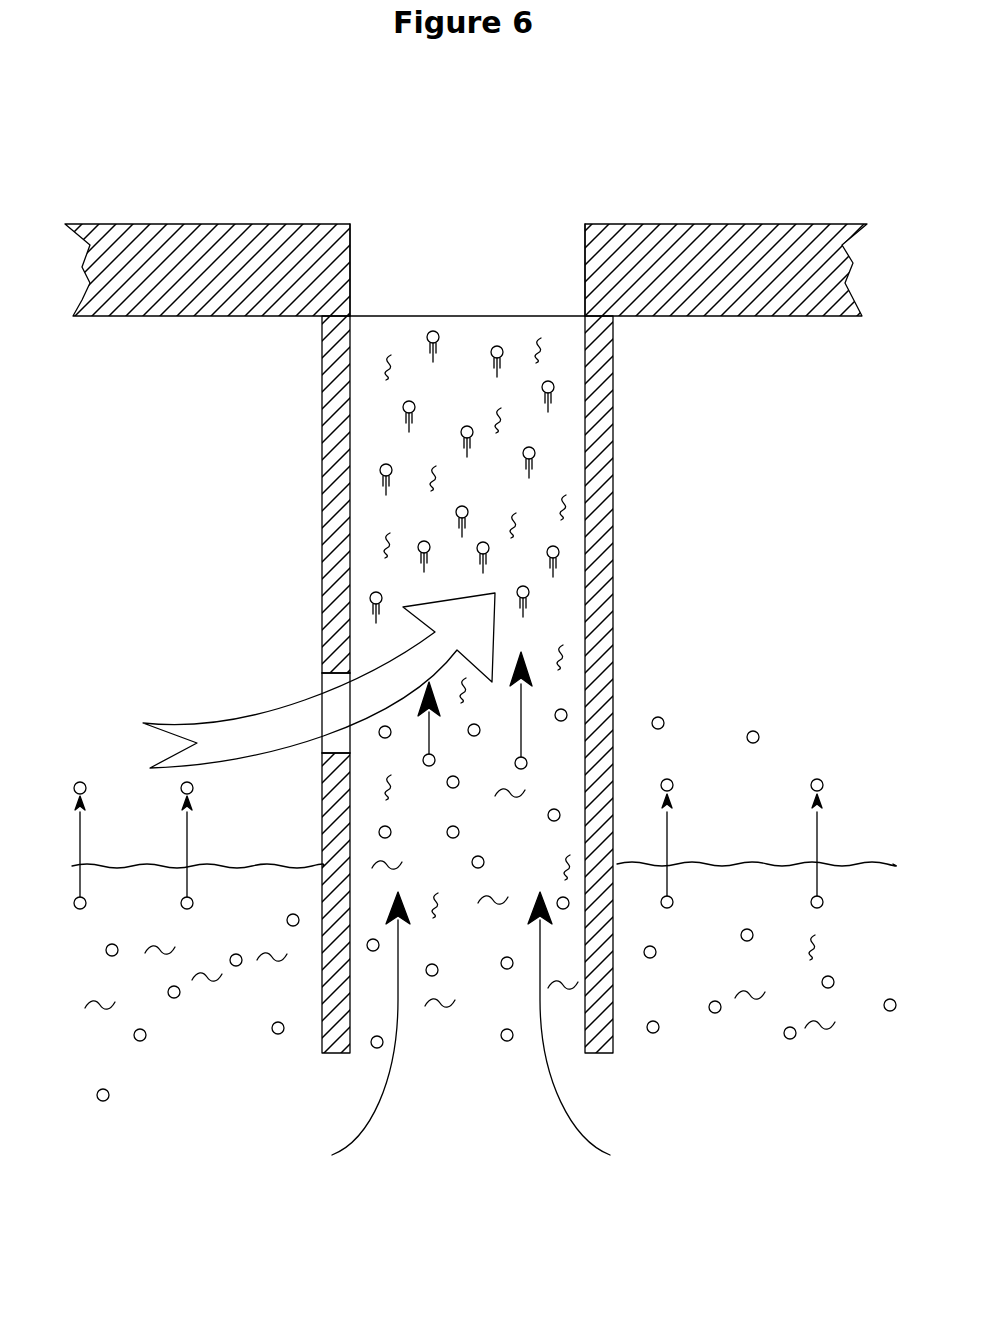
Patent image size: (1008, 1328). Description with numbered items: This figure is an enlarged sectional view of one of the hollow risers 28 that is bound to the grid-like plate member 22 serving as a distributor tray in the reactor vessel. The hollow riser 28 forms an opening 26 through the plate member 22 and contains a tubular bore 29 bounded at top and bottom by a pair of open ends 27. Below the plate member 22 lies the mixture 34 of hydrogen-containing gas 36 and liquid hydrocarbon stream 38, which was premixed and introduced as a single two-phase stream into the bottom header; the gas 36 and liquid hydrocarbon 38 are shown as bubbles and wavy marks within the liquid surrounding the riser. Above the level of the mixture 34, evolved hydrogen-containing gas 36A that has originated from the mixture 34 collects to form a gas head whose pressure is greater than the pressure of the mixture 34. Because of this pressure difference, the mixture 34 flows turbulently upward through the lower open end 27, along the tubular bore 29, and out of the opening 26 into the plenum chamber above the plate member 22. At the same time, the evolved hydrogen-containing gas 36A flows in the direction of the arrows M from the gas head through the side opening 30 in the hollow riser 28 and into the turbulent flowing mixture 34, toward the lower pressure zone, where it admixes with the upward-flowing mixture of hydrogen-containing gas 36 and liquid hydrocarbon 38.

The plate member 22 is at (678, 222).
The openings 26 is at (407, 248).
The open ends 27 is at (453, 315).
The hollow risers 28 is at (333, 393).
The tubular bore 29 is at (585, 362).
The opening 30 is at (330, 676).
The arrows M is at (215, 735).
The mixture 34 is at (233, 998).
The hydrogen-containing gas 36 is at (88, 903).
The evolved hydrogen-containing gas 36A is at (178, 792).
The liquid hydrocarbon stream 38 is at (102, 1010).